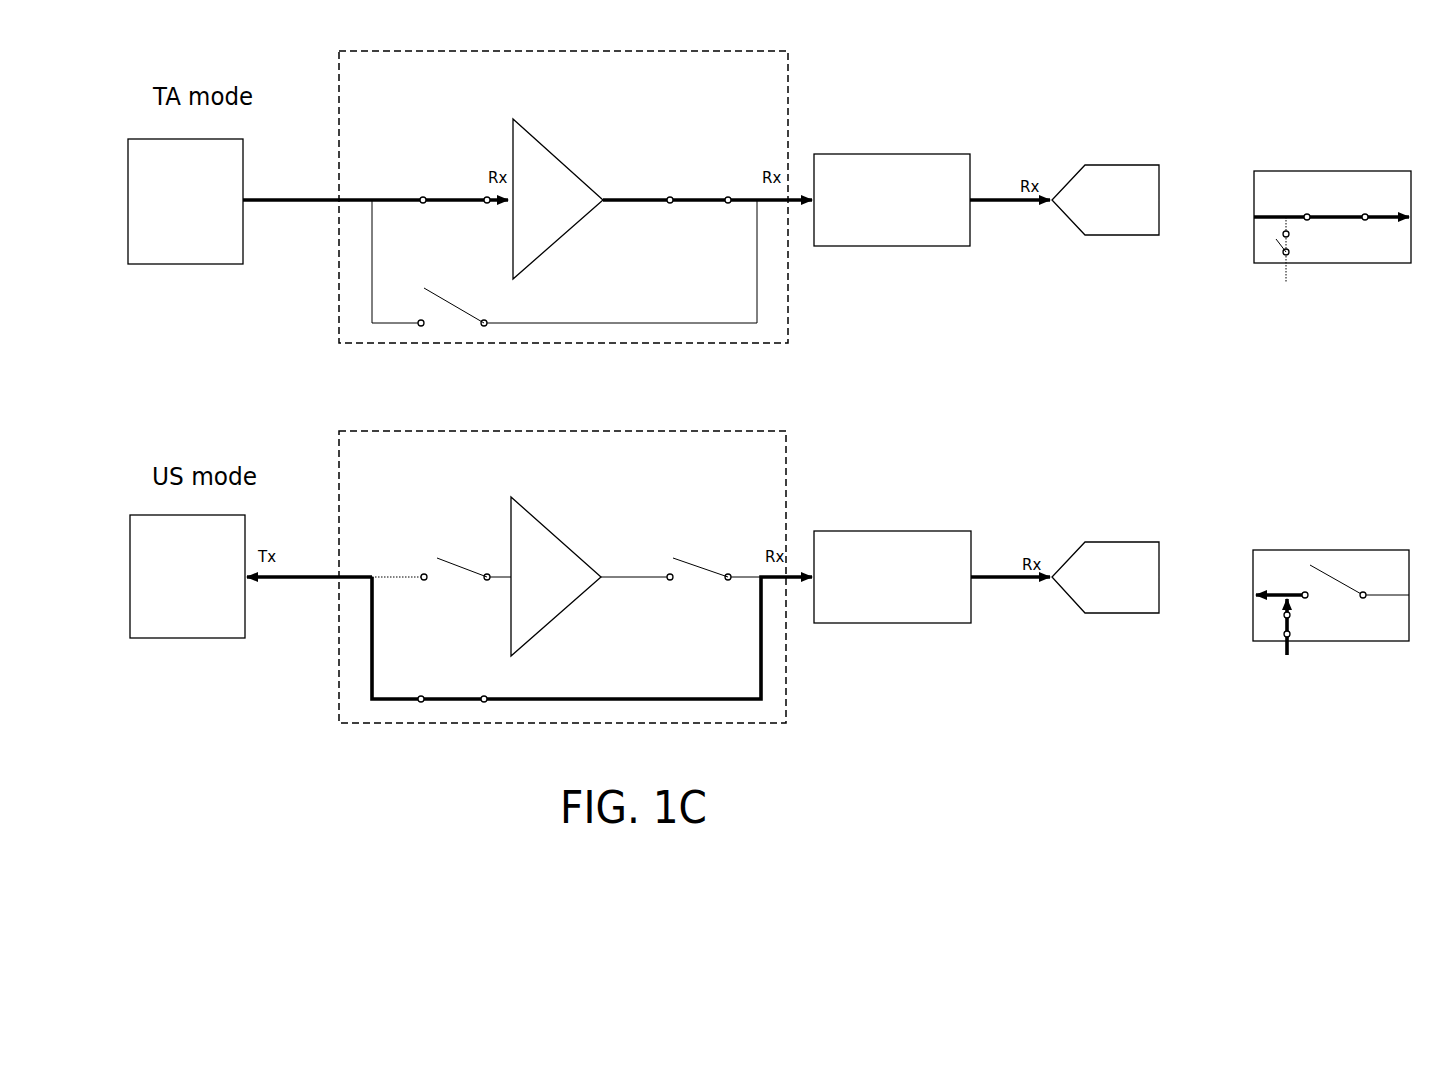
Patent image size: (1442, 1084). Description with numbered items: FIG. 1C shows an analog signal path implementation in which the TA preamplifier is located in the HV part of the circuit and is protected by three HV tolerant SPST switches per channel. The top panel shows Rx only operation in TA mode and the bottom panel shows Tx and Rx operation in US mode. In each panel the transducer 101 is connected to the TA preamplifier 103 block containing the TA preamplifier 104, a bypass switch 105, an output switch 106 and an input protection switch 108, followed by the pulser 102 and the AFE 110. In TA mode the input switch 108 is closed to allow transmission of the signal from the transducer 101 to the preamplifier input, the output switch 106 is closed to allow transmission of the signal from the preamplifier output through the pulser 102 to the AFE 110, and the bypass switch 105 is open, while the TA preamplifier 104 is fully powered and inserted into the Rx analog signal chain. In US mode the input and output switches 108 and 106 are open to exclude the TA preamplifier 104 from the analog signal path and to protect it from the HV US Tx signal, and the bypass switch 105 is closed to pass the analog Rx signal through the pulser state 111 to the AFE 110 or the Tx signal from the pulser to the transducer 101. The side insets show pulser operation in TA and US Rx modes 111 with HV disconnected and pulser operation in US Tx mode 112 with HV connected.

The transducer 101 is at (126, 200).
The pulser 102 is at (891, 152).
The TA preamplifier 103 is at (336, 302).
The TA preamplifier 104 is at (559, 155).
The bypass switch 105 is at (459, 303).
The output switch 106 is at (701, 197).
The input protection switch 108 is at (449, 197).
The AFE 110 is at (1122, 162).
The pulser in TA and US Rx modes 111 is at (1252, 190).
The pulser in US Tx mode 112 is at (1251, 575).